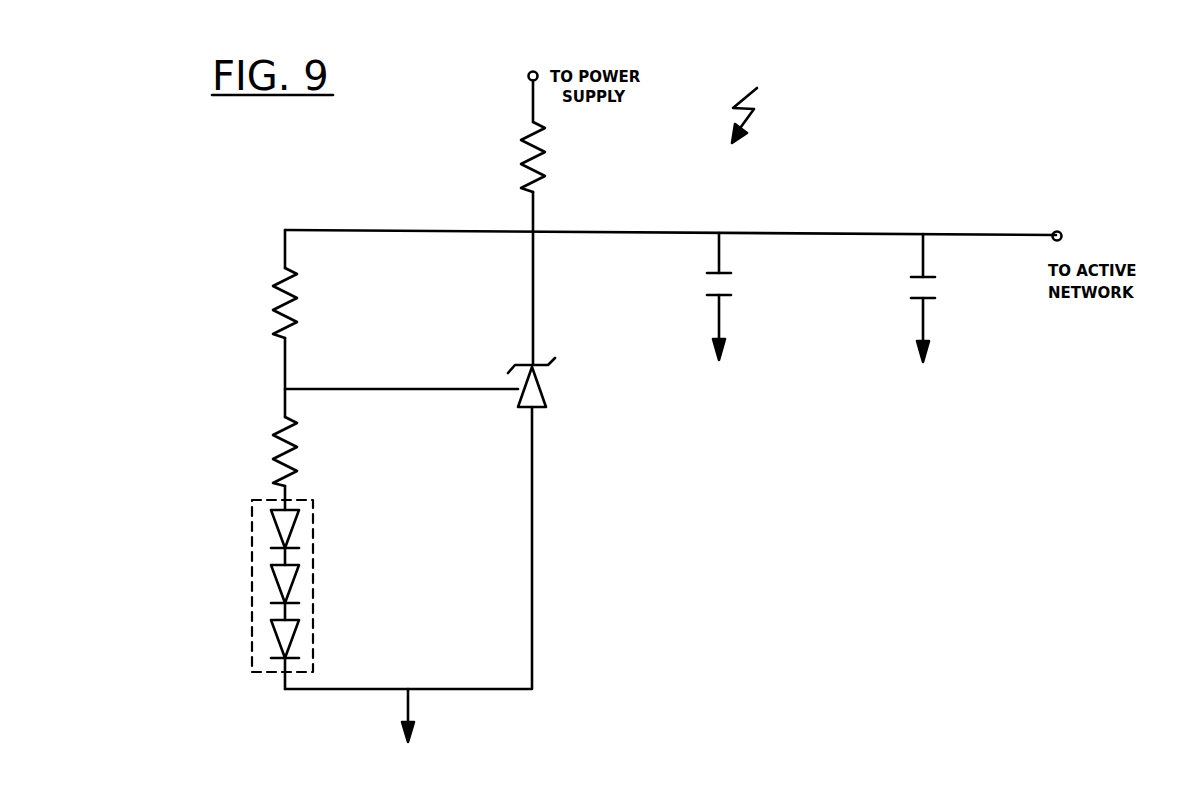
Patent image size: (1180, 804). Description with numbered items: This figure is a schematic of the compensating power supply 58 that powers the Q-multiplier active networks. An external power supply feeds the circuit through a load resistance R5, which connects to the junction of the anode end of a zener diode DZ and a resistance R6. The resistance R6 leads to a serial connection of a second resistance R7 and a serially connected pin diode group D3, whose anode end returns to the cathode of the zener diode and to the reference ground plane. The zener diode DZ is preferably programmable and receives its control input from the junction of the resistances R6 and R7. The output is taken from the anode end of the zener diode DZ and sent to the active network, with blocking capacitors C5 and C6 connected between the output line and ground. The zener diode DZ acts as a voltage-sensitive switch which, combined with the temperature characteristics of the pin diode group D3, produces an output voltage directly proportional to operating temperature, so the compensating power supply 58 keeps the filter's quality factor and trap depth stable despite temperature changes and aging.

The load resistance R5 is at (550, 157).
The resistance R6 is at (267, 303).
The second resistance R7 is at (267, 451).
The pin diode group D3 is at (263, 594).
The zener diode DZ is at (543, 382).
The blocking capacitor C5 is at (734, 296).
The blocking capacitor C6 is at (939, 298).
The compensating power supply 58 is at (796, 110).